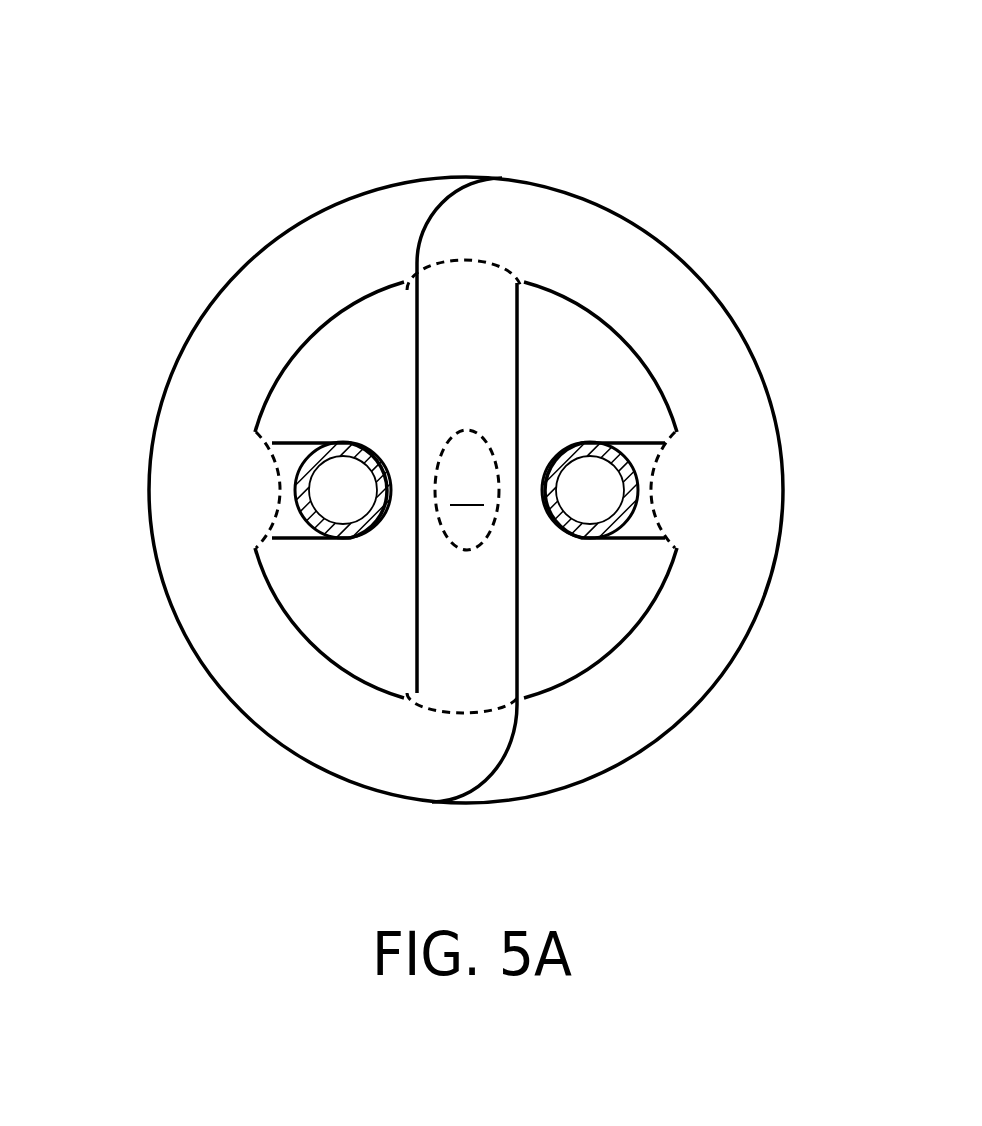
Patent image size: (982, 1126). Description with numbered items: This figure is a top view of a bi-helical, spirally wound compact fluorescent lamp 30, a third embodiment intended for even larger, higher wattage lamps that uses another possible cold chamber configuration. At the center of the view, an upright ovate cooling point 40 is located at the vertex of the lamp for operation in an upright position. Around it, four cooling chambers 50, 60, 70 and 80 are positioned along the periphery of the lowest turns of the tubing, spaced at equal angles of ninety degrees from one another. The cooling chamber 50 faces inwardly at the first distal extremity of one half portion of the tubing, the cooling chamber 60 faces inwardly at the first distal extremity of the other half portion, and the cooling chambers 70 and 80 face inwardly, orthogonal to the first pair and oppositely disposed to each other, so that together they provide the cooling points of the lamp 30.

The compact fluorescent lamp 30 is at (140, 98).
The upright ovate cooling point 40 is at (467, 490).
The cooling chamber 50 is at (468, 320).
The cooling chamber 60 is at (470, 673).
The cooling chamber 70 is at (282, 489).
The cooling chamber 80 is at (650, 489).